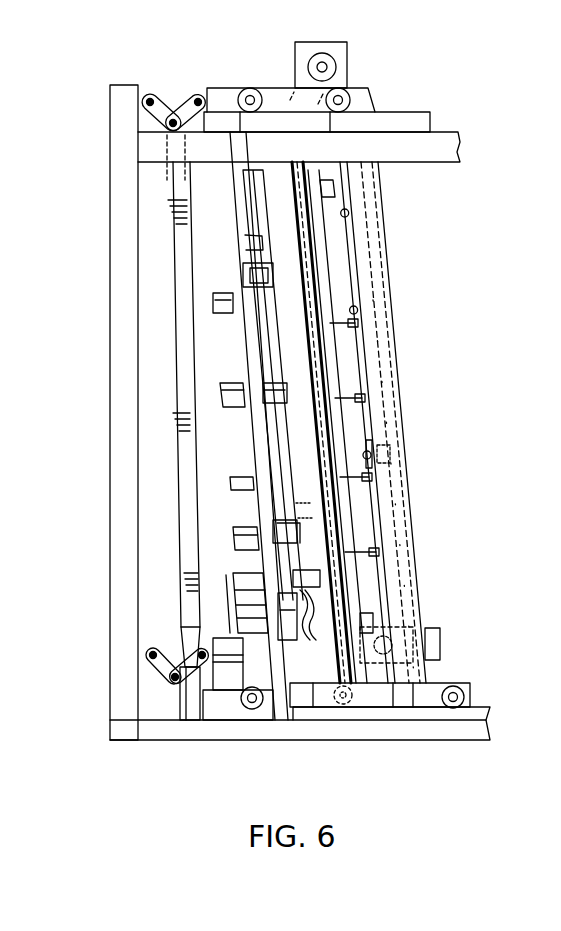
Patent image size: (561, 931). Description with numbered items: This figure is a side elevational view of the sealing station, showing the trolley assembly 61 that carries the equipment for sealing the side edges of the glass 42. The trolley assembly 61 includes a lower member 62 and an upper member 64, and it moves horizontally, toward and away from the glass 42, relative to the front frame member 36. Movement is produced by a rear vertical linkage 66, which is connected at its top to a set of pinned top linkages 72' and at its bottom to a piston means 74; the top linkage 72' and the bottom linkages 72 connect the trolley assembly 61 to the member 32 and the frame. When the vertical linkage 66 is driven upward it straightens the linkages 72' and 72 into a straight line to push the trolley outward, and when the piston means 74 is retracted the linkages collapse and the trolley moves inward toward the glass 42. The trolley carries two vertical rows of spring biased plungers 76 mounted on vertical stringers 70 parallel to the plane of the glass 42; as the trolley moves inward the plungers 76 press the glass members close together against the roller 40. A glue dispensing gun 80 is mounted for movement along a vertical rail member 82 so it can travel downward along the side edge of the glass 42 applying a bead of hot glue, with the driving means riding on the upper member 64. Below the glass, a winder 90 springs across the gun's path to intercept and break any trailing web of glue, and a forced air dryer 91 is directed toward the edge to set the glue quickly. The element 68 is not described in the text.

The member 32 is at (110, 472).
The front frame member 36 is at (235, 230).
The roller 40 is at (243, 313).
The glass 42 is at (320, 333).
The trolley assembly 61 is at (404, 295).
The lower member 62 is at (325, 722).
The upper member 64 is at (365, 95).
The rear vertical linkage 66 is at (180, 560).
The side plate 68 is at (400, 390).
The vertical stringers 70 is at (357, 433).
The bottom linkages 72 is at (174, 715).
The top linkage 72' is at (173, 114).
The piston means 74 is at (205, 722).
The spring biased plungers 76 is at (375, 398).
The glue dispensing gun 80 is at (287, 212).
The vertical rail member 82 is at (357, 252).
The winders 90 is at (315, 637).
The forced air dryers 91 is at (255, 193).